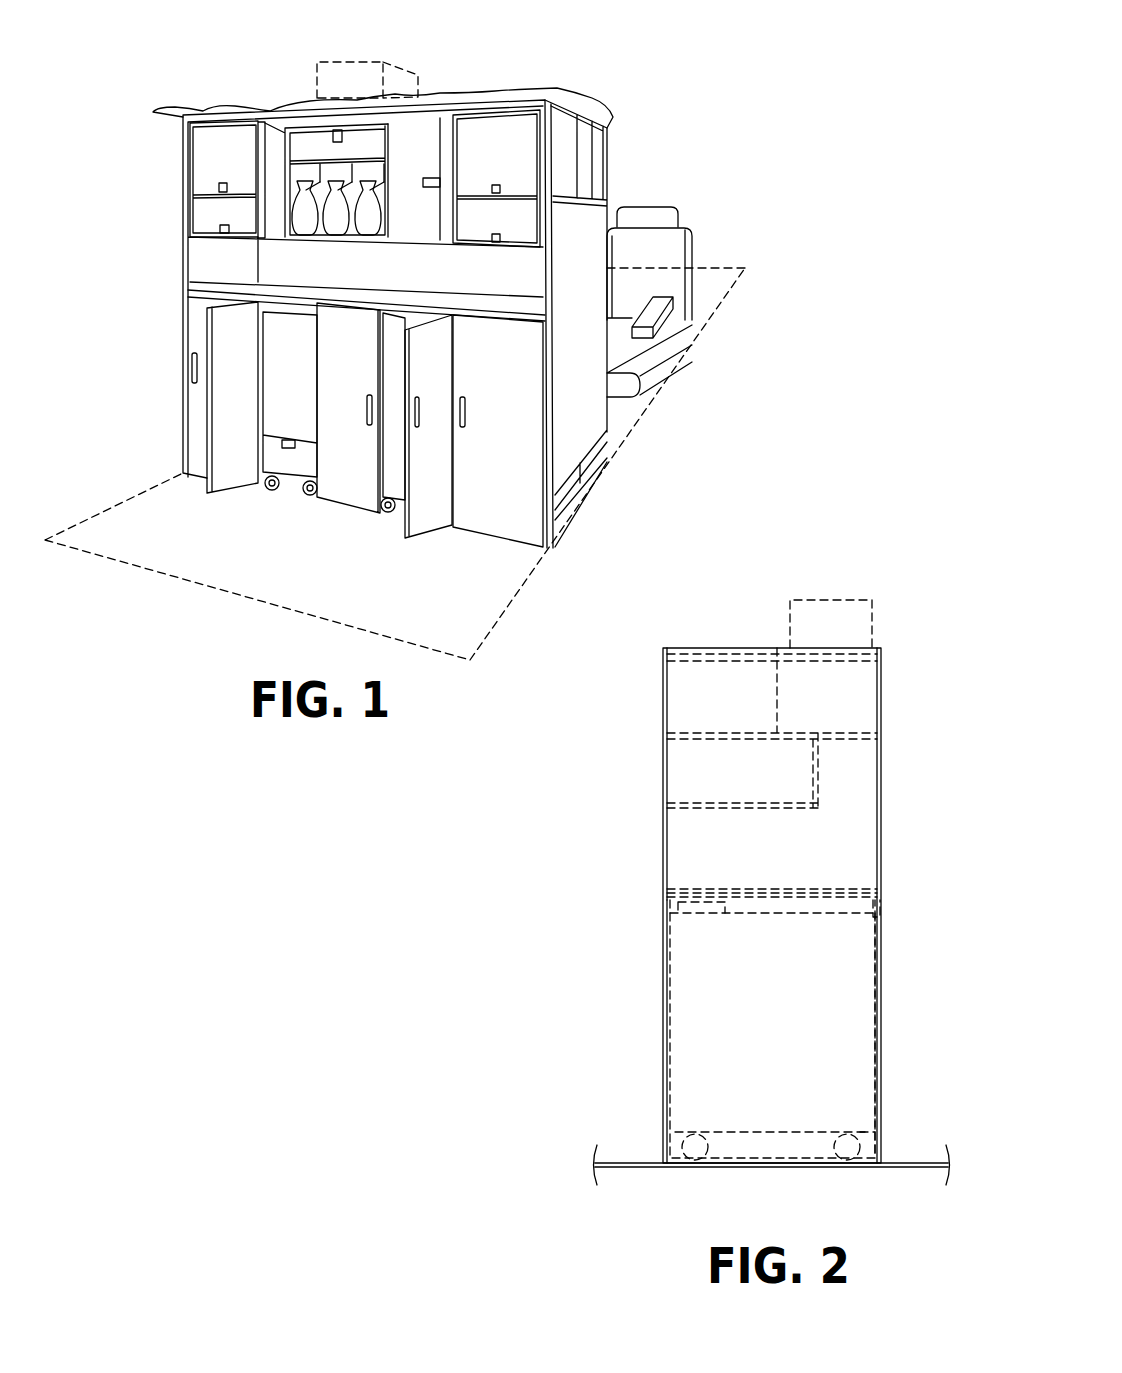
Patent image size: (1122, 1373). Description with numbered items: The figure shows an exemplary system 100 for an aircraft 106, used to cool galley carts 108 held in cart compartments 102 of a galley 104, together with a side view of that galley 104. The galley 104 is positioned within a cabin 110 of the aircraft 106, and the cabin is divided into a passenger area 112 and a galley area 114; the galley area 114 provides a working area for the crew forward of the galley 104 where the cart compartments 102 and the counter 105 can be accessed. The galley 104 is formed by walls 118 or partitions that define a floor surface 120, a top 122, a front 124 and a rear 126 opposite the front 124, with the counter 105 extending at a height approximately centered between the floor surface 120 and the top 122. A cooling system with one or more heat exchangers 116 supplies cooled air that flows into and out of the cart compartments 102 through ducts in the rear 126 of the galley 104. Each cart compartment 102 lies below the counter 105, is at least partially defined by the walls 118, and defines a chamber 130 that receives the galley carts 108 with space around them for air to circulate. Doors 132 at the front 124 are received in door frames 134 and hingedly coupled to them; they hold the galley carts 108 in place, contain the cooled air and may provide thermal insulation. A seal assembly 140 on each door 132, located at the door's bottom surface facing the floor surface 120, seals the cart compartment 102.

In FIG. 1, the system 100 is at (456, 58).
In FIG. 1, the cart compartment 102 is at (283, 492).
In FIG. 2, the cart compartment 102 is at (732, 1142).
In FIG. 1, the galley 104 is at (610, 160).
In FIG. 2, the galley 104 is at (632, 645).
In FIG. 1, the counter 105 is at (523, 296).
In FIG. 2, the counter 105 is at (837, 893).
In FIG. 1, the aircraft 106 is at (165, 105).
In FIG. 1, the galley cart 108 is at (307, 423).
In FIG. 2, the galley cart 108 is at (847, 1085).
In FIG. 1, the cabin 110 is at (155, 160).
In FIG. 1, the passenger area 112 is at (745, 272).
In FIG. 1, the galley area 114 is at (527, 587).
In FIG. 1, the heat exchanger 116 is at (338, 62).
In FIG. 2, the heat exchanger 116 is at (872, 620).
In FIG. 2, the wall 118 is at (770, 648).
In FIG. 2, the floor surface 120 is at (763, 1168).
In FIG. 2, the top 122 is at (737, 650).
In FIG. 2, the front 124 is at (882, 807).
In FIG. 2, the rear 126 is at (662, 982).
In FIG. 2, the chamber 130 is at (825, 909).
In FIG. 1, the door 132 is at (228, 460).
In FIG. 2, the door 132 is at (875, 997).
In FIG. 2, the door frame 134 is at (877, 908).
In FIG. 1, the seal assembly 140 is at (517, 540).
In FIG. 2, the seal assembly 140 is at (877, 1142).